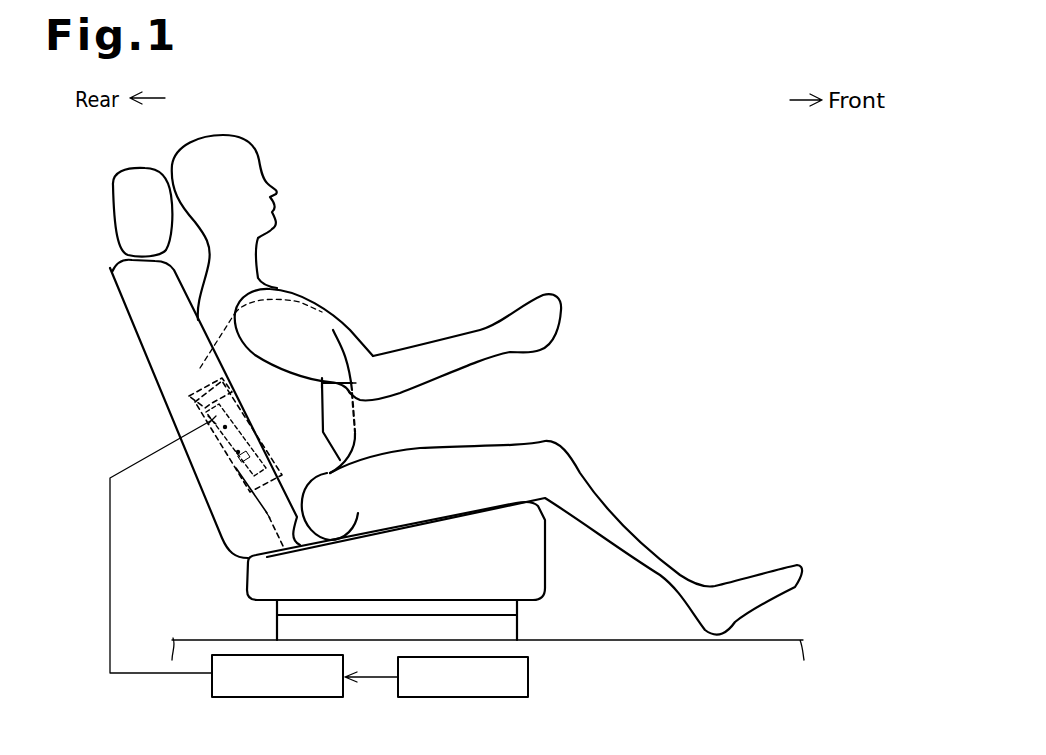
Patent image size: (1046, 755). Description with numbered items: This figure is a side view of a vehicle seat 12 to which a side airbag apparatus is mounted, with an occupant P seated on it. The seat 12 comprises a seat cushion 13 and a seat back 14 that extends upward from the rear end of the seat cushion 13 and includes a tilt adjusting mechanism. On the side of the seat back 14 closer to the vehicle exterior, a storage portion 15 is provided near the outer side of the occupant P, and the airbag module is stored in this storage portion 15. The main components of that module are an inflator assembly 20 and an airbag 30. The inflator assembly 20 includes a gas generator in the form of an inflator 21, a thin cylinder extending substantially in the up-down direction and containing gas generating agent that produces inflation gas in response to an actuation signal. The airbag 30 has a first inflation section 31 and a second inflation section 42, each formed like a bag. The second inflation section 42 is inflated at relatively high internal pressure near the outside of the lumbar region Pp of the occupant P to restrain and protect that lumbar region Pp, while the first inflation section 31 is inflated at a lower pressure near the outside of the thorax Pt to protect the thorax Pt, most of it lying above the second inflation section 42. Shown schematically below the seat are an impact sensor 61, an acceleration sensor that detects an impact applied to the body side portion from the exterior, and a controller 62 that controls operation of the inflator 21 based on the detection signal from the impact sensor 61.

The occupant P is at (182, 150).
The vehicle seat 12 is at (160, 390).
The seat back 14 is at (193, 363).
The seat cushion 13 is at (248, 583).
The storage portion 15 is at (197, 390).
The inflator assembly 20 is at (240, 425).
The inflator 21 is at (241, 410).
The airbag 30 is at (412, 428).
The first inflation section 31 is at (356, 430).
The second inflation section 42 is at (347, 491).
The thorax Pt is at (367, 382).
The lumbar region Pp is at (274, 514).
The impact sensor 61 is at (528, 668).
The controller 62 is at (337, 667).